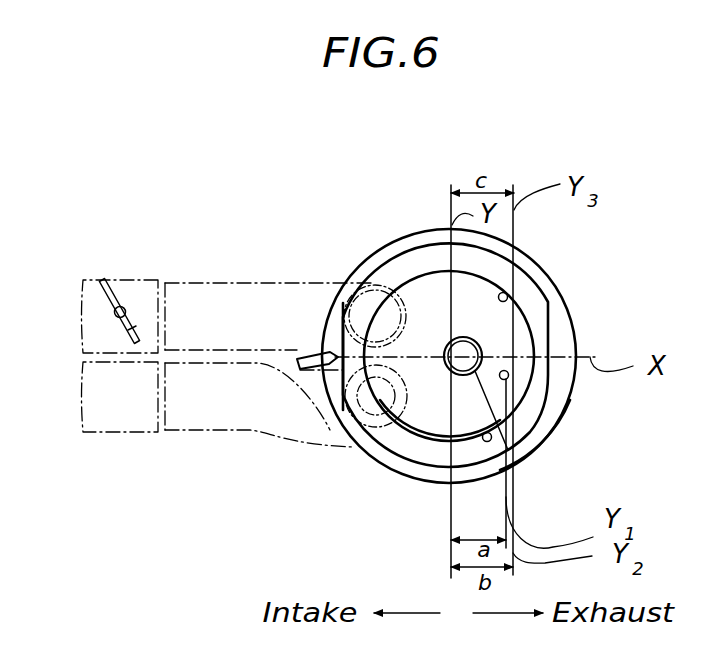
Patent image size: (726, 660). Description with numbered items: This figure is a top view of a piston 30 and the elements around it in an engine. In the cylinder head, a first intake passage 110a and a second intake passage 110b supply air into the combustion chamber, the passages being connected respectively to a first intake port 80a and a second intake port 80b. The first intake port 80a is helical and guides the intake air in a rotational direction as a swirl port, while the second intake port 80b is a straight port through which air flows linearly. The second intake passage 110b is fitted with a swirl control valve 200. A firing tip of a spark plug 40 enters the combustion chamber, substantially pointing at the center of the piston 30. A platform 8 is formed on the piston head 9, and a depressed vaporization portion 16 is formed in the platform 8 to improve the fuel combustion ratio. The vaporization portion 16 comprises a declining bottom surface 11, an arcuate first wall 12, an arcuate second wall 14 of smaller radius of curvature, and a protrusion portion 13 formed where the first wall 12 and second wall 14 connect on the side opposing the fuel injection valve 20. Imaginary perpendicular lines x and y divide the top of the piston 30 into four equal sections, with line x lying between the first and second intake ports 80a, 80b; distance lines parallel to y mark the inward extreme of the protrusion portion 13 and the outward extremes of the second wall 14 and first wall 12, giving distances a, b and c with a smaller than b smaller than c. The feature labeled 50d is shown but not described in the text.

The platform 8 is at (538, 310).
The piston head 9 is at (576, 337).
The declining bottom surface 11 is at (428, 266).
The first wall 12 is at (507, 294).
The protrusion portion 13 is at (508, 378).
The second wall 14 is at (488, 442).
The depressed vaporization portion 16 is at (430, 452).
The fuel injection valve 20 is at (300, 369).
The piston 30 is at (553, 437).
The spark plug 40 is at (525, 482).
The squish area 50d is at (343, 303).
The first intake port 80a is at (299, 448).
The second intake port 80b is at (380, 295).
The first intake passage 110a is at (108, 435).
The second intake passage 110b is at (137, 280).
The swirl control valve 200 is at (102, 280).